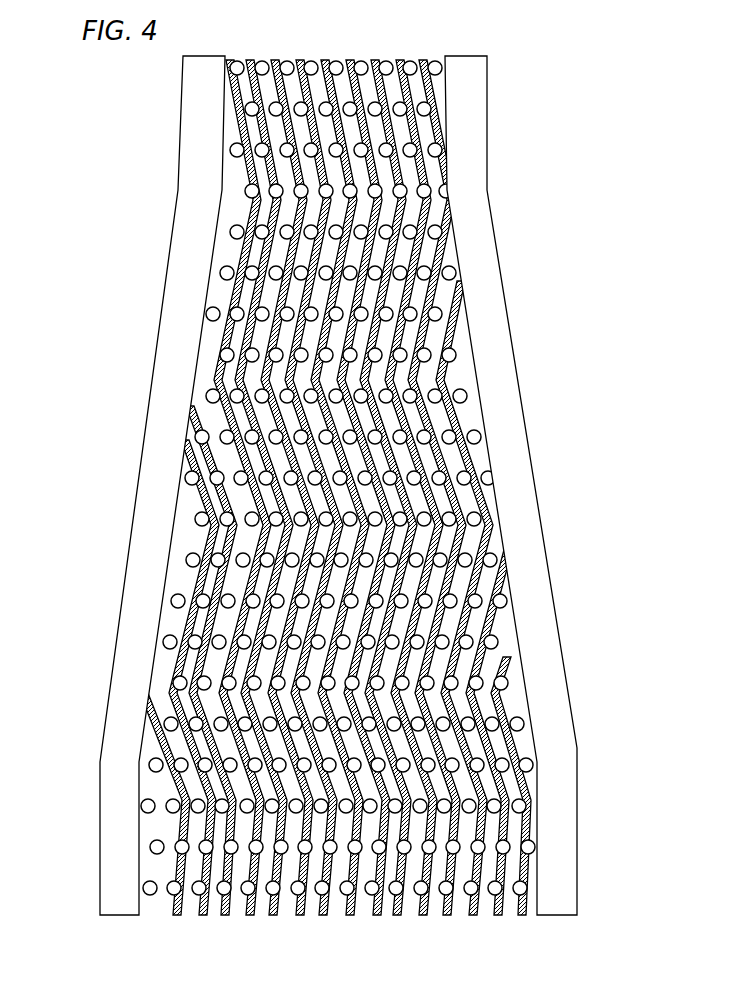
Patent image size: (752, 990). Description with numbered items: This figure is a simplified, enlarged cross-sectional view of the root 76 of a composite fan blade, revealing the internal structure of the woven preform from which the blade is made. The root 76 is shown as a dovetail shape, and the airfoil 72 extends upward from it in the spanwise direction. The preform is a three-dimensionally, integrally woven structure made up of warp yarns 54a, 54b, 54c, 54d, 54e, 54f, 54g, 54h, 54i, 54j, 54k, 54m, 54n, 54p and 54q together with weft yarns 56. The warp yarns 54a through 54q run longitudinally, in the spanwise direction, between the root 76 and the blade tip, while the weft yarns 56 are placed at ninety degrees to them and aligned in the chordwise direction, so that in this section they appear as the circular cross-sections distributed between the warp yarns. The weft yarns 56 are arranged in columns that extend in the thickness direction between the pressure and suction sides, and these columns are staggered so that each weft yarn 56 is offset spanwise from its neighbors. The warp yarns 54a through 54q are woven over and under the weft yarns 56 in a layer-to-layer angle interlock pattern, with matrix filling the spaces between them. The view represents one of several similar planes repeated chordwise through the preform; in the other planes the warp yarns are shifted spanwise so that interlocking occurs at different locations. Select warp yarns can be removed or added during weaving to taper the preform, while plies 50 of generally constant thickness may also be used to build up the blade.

The plies 50 is at (100, 828).
The warp yarn 54a is at (148, 715).
The warp yarn 54b is at (185, 441).
The warp yarn 54c is at (192, 396).
The warp yarn 54d is at (226, 86).
The warp yarn 54e is at (248, 59).
The warp yarn 54f is at (274, 59).
The warp yarn 54g is at (299, 59).
The warp yarn 54h is at (325, 59).
The warp yarn 54i is at (350, 59).
The warp yarn 54j is at (375, 59).
The warp yarn 54k is at (400, 59).
The warp yarn 54m is at (452, 213).
The warp yarn 54n is at (462, 278).
The warp yarn 54p is at (506, 557).
The warp yarn 54q is at (506, 666).
The weft yarns 56 is at (454, 191).
The airfoil 72 is at (146, 132).
The root 76 is at (103, 412).